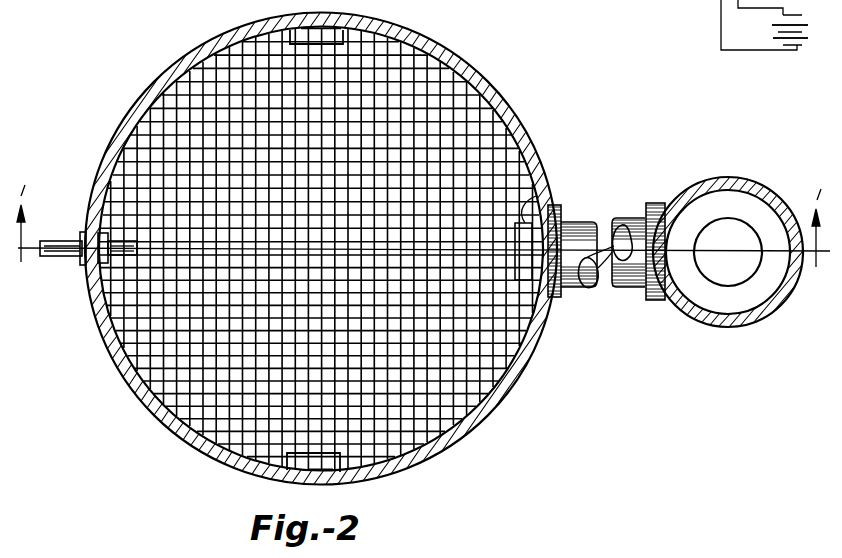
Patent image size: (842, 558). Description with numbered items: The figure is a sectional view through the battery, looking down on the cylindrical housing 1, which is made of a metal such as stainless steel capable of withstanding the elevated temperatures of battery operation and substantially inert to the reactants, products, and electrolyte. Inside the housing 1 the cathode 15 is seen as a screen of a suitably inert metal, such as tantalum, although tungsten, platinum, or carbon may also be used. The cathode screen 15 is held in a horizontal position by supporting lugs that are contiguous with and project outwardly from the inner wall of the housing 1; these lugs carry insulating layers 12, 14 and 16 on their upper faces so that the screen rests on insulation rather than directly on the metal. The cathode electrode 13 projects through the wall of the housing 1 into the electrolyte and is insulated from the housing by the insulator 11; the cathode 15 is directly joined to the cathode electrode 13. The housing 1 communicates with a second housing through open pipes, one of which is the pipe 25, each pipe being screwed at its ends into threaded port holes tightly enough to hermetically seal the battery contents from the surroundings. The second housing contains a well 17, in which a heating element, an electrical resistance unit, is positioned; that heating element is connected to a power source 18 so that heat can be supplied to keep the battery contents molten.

The cylindrical housing 1 is at (186, 58).
The insulator 11 is at (78, 258).
The insulating layer 12 is at (338, 15).
The cathode electrode 13 is at (80, 236).
The insulating layer 14 is at (548, 212).
The cathode 15 is at (484, 132).
The insulating layer 16 is at (330, 480).
The well 17 is at (740, 250).
The power source 18 is at (772, 32).
The open pipe 25 is at (626, 226).